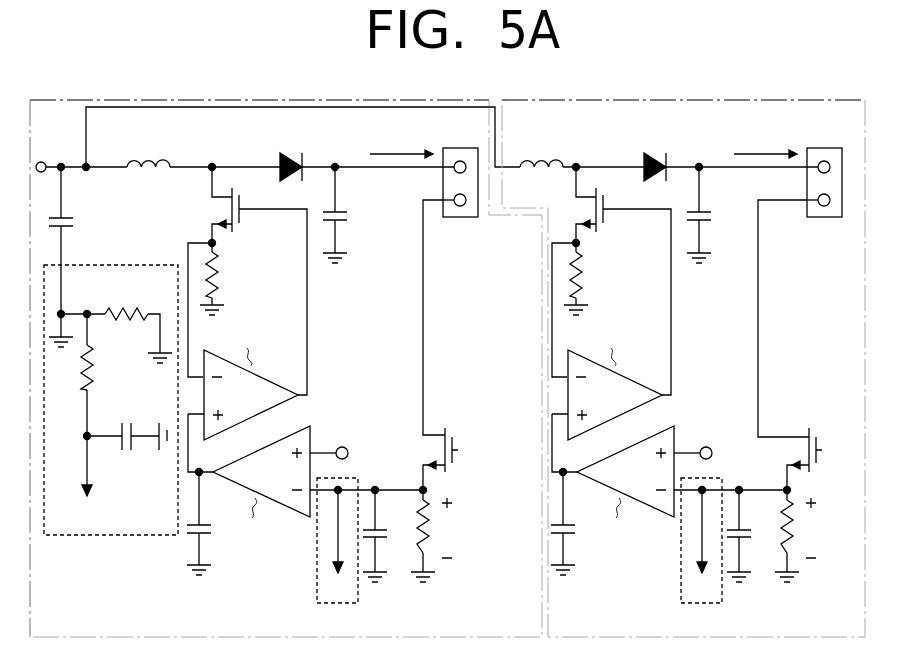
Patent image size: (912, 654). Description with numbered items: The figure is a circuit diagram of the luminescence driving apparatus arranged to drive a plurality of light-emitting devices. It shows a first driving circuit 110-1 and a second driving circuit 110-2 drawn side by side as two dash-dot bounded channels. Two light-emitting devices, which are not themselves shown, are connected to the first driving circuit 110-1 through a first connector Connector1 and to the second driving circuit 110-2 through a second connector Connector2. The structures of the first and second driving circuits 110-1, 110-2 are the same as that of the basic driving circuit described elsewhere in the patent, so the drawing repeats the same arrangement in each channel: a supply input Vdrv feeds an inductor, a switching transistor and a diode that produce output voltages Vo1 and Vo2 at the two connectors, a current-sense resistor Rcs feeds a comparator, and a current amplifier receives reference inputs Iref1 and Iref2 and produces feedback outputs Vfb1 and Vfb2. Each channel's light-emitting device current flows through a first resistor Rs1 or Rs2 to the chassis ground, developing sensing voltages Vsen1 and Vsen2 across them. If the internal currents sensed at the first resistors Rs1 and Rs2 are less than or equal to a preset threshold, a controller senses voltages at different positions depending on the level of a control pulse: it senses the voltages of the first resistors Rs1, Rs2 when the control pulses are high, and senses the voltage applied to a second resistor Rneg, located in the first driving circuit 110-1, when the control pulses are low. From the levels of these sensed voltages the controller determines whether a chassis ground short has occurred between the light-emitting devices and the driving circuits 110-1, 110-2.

The first driving circuit 110-1 is at (268, 100).
The second driving circuit 110-2 is at (739, 100).
The driving voltage input Vdrv is at (51, 156).
The first output voltage node Vo1 is at (335, 198).
The second output voltage node Vo2 is at (699, 198).
The first connector Connector1 is at (473, 196).
The second connector Connector2 is at (809, 196).
The current sense resistor Rcs is at (229, 275).
The first reference current input Iref1 is at (351, 454).
The second reference current input Iref2 is at (715, 454).
The first feedback voltage Vfb1 is at (337, 541).
The second feedback voltage Vfb2 is at (701, 541).
The first resistor Rs1 is at (409, 526).
The first resistor Rs2 is at (773, 526).
The first sensing voltage Vsen1 is at (459, 528).
The second sensing voltage Vsen2 is at (823, 528).
The second resistor Rneg is at (126, 302).